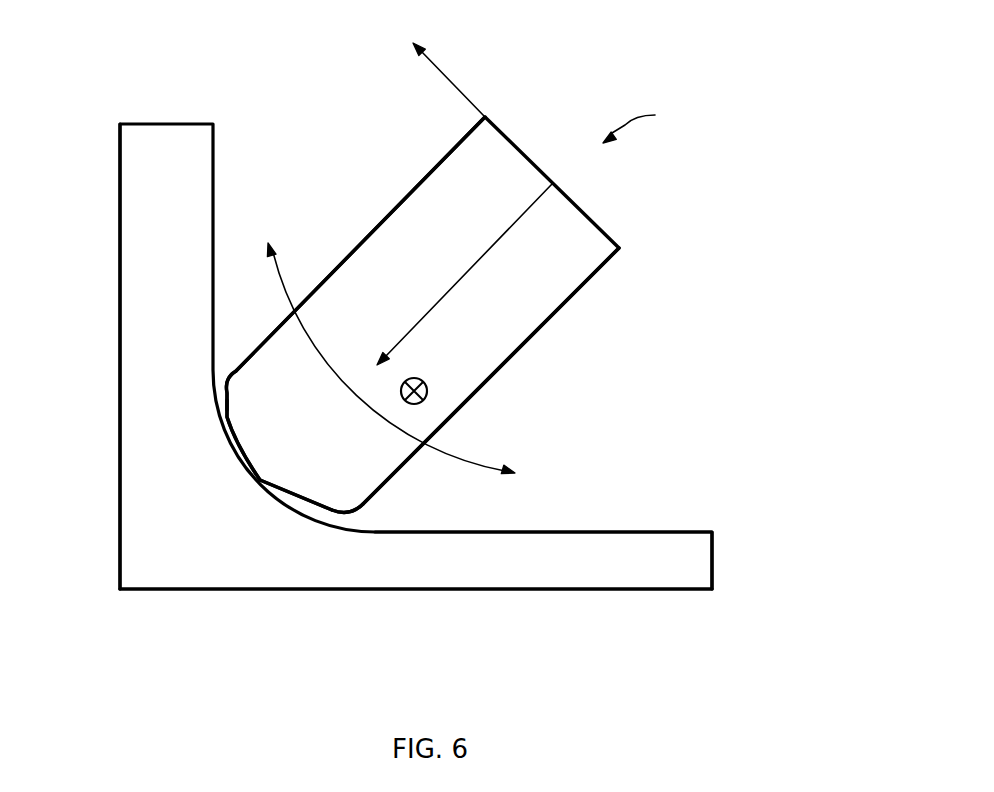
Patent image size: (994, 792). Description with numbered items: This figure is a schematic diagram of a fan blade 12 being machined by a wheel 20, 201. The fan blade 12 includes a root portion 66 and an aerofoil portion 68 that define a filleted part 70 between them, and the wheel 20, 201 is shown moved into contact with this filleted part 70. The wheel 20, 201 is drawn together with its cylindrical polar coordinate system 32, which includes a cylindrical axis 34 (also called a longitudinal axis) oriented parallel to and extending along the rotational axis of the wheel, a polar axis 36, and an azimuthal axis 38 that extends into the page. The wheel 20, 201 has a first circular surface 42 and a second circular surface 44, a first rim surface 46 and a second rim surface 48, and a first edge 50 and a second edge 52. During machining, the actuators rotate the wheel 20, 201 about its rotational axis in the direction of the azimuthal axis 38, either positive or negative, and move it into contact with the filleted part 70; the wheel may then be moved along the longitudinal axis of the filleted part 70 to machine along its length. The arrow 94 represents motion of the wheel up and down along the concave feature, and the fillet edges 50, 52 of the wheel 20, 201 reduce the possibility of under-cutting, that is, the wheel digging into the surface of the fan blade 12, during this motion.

The fan blade 12 is at (240, 632).
The root portion 66 is at (120, 172).
The aerofoil portion 68 is at (673, 589).
The filleted part 70 is at (120, 553).
The wheel 20 is at (705, 334).
The wheel 201 is at (508, 314).
The cylindrical polar coordinate system 32 is at (646, 123).
The cylindrical axis 34 is at (463, 93).
The polar axis 36 is at (467, 271).
The azimuthal axis 38 is at (427, 393).
The first circular surface 42 is at (524, 343).
The second circular surface 44 is at (408, 195).
The first rim surface 46 is at (302, 496).
The second rim surface 48 is at (237, 430).
The first edge 50 is at (350, 510).
The second edge 52 is at (224, 382).
The arrow 94 is at (282, 280).